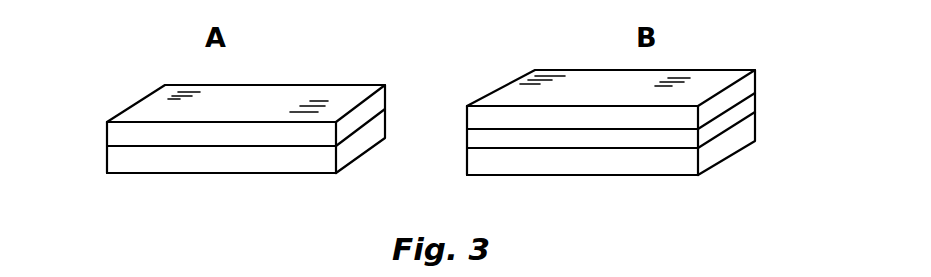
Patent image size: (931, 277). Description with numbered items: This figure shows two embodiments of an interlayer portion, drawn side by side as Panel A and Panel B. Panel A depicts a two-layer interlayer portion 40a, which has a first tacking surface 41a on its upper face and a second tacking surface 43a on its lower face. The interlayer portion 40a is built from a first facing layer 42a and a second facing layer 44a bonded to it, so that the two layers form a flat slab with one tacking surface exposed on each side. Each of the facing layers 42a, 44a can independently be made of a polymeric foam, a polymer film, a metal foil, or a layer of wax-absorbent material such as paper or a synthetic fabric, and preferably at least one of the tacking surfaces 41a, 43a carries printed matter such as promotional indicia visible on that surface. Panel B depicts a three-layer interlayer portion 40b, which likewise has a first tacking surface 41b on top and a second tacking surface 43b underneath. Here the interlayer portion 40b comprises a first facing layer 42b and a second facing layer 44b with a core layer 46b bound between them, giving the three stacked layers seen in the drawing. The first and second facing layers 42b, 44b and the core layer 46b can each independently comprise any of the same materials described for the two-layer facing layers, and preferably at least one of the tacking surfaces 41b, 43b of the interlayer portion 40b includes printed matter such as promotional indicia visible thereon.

The interlayer portion 40a is at (344, 60).
The first tacking surface 41a is at (142, 108).
The first facing layer 42a is at (116, 130).
The second facing layer 44a is at (116, 157).
The second tacking surface 43a is at (226, 174).
The interlayer portion 40b is at (728, 56).
The first tacking surface 41b is at (516, 96).
The first facing layer 42b is at (747, 90).
The core layer 46b is at (748, 108).
The second facing layer 44b is at (750, 132).
The second tacking surface 43b is at (622, 176).